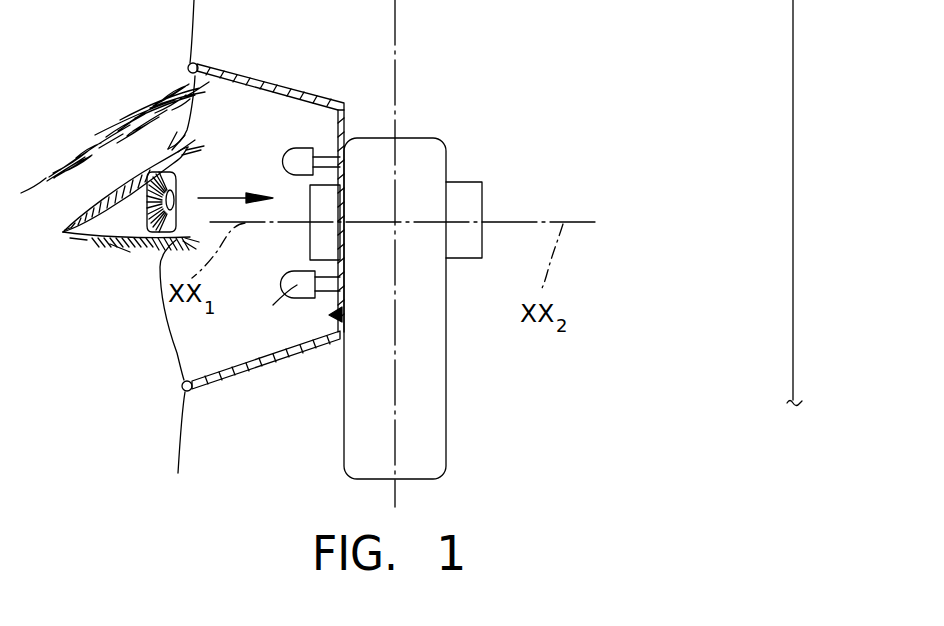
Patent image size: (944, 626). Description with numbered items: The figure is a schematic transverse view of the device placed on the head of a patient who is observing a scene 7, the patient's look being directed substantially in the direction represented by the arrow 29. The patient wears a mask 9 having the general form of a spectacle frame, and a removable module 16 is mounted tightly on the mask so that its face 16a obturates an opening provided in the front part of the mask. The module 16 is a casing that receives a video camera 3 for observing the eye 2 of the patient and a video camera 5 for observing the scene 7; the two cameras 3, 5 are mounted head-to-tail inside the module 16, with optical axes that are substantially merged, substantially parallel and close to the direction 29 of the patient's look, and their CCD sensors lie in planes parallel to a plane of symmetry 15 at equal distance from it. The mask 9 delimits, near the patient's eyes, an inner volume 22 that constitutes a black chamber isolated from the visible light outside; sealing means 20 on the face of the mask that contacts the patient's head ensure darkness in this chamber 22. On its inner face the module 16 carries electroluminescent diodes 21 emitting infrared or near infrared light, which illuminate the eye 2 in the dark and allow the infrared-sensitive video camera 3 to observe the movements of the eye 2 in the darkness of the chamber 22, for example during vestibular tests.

The eye 2 is at (127, 211).
The video camera 3 is at (323, 234).
The video camera 5 is at (470, 200).
The scene 7 is at (793, 15).
The mask 9 is at (253, 78).
The plane of symmetry 15 is at (395, 60).
The removable module 16 is at (433, 317).
The face 16a is at (336, 306).
The sealing means 20 is at (195, 65).
The electroluminescent diodes 21 is at (298, 155).
The inner volume 22 is at (253, 343).
The arrow 29 is at (229, 197).